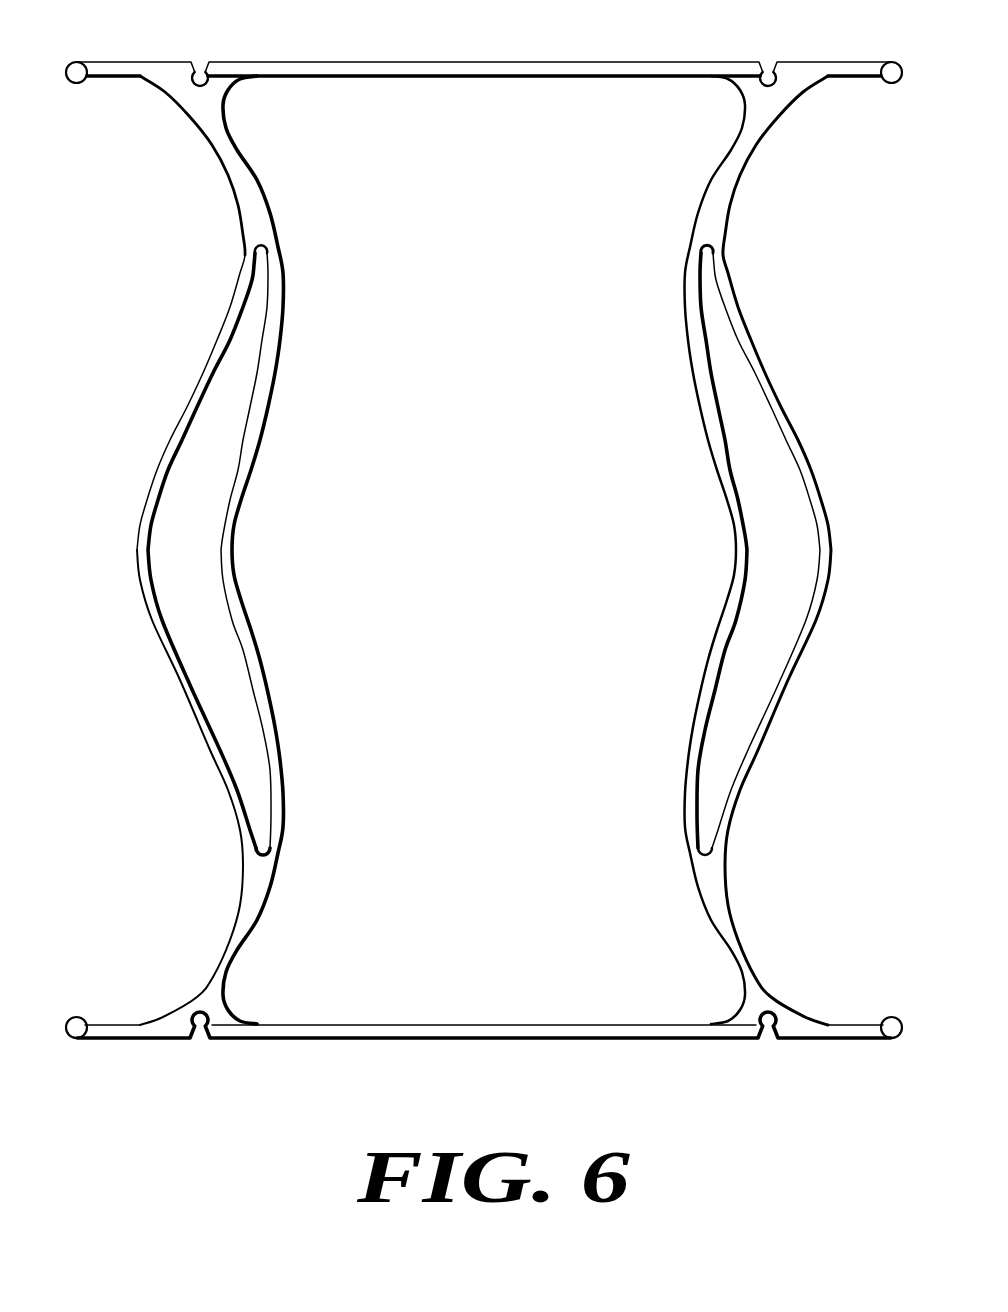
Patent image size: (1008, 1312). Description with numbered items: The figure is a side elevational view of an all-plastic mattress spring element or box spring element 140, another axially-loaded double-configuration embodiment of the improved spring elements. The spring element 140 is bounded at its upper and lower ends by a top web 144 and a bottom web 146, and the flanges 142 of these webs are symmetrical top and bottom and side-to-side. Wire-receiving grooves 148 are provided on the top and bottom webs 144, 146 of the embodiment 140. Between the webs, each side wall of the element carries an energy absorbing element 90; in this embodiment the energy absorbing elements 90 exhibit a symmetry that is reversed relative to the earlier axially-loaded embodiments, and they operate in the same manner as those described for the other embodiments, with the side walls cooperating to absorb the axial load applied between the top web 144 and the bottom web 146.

The all-plastic spring element 140 is at (484, 552).
The flange 142 is at (121, 62).
The top web 144 is at (484, 50).
The bottom web 146 is at (505, 1025).
The wire-receiving groove 148 is at (775, 55).
The energy absorbing element 90 is at (662, 553).